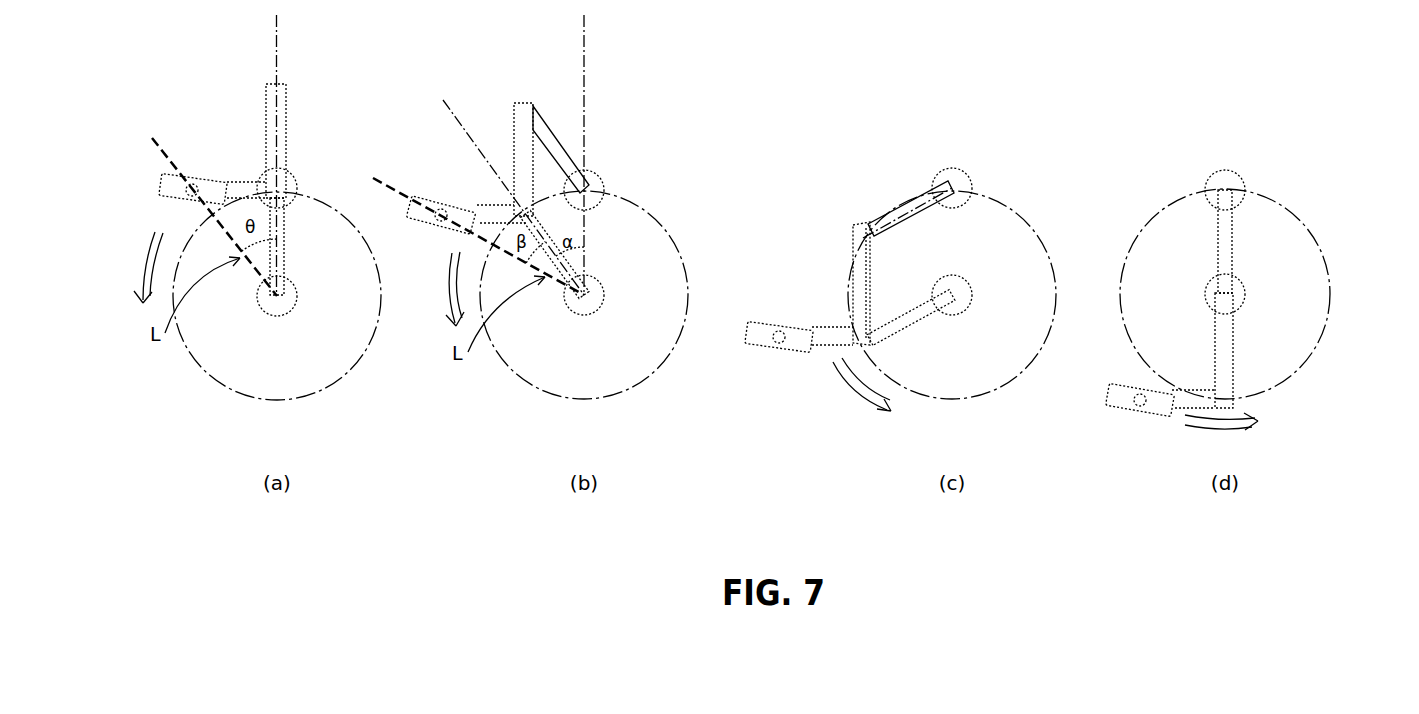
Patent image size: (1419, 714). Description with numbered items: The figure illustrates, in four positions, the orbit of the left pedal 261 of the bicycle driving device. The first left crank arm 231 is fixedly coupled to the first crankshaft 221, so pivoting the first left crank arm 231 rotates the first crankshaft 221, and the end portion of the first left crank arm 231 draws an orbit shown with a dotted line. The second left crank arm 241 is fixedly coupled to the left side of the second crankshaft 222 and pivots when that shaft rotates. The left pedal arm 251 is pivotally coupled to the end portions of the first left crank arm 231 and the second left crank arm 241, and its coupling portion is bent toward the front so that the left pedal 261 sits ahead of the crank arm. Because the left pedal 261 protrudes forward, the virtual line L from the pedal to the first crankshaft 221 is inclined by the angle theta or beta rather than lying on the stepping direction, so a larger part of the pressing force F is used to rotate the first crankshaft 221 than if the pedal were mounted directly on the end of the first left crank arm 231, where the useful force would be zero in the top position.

The first crankshaft 221 is at (297, 300).
The second crankshaft 222 is at (292, 174).
The first left crank arm 231 is at (287, 245).
The second left crank arm 241 is at (547, 124).
The left pedal arm 251 is at (287, 99).
The left pedal 261 is at (190, 175).